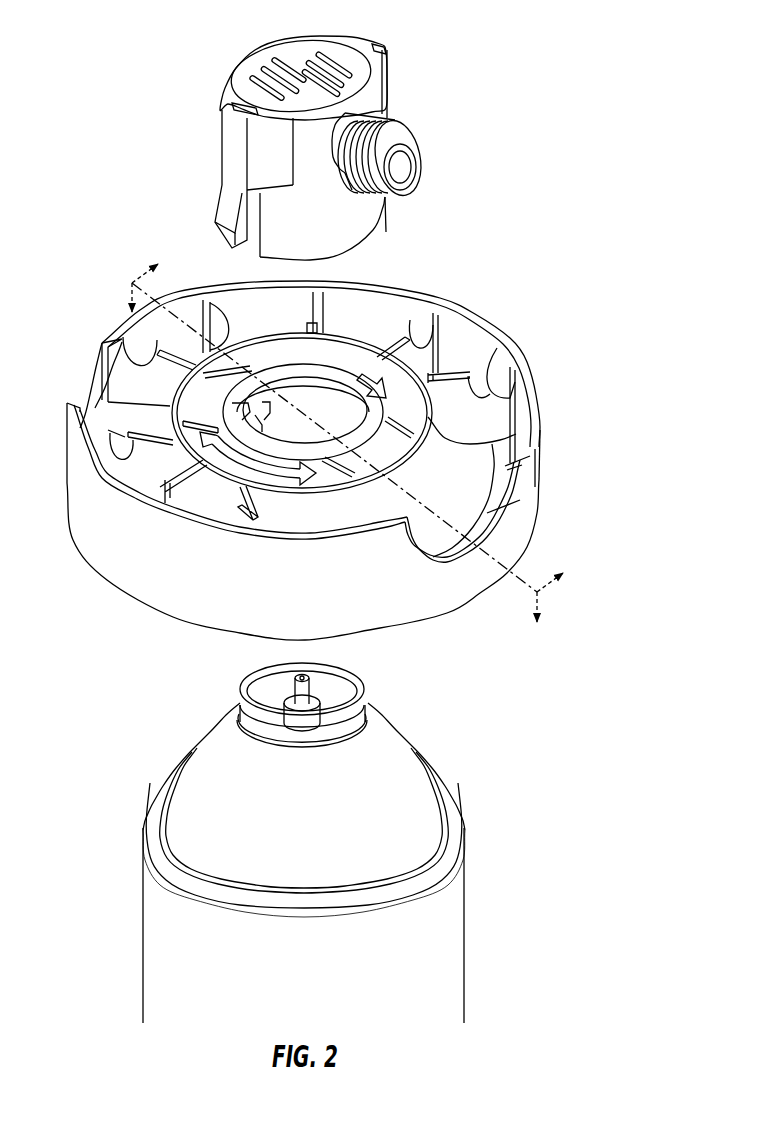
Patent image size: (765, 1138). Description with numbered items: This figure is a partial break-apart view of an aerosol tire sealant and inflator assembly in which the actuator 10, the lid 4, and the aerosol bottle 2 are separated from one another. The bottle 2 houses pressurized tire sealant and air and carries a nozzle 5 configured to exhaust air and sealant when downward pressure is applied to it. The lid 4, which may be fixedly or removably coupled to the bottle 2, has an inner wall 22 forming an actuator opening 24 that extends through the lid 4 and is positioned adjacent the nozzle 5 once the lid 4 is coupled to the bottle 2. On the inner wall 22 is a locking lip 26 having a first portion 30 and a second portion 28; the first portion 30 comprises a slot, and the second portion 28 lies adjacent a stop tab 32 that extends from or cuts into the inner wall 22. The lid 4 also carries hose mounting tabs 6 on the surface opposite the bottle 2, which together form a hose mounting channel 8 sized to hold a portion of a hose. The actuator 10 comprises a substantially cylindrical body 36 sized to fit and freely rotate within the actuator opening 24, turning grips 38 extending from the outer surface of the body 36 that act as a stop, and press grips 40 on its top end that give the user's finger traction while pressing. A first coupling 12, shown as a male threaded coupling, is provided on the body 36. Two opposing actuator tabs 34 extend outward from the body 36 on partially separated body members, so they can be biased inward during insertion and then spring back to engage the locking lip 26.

The aerosol bottle 2 is at (440, 936).
The lid 4 is at (100, 312).
The nozzle 5 is at (305, 692).
The hose mounting tab 6 is at (450, 372).
The hose mounting channel 8 is at (503, 352).
The actuator 10 is at (412, 60).
The first coupling 12 is at (388, 123).
The inner wall 22 is at (317, 417).
The actuator opening 24 is at (318, 374).
The locking lip 26 is at (382, 407).
The second portion 28 is at (232, 404).
The first portion 30 is at (270, 413).
The stop tab 32 is at (265, 423).
The actuator tab 34 is at (222, 230).
The body 36 is at (342, 227).
The turning grip 38 is at (232, 150).
The press grip 40 is at (303, 74).